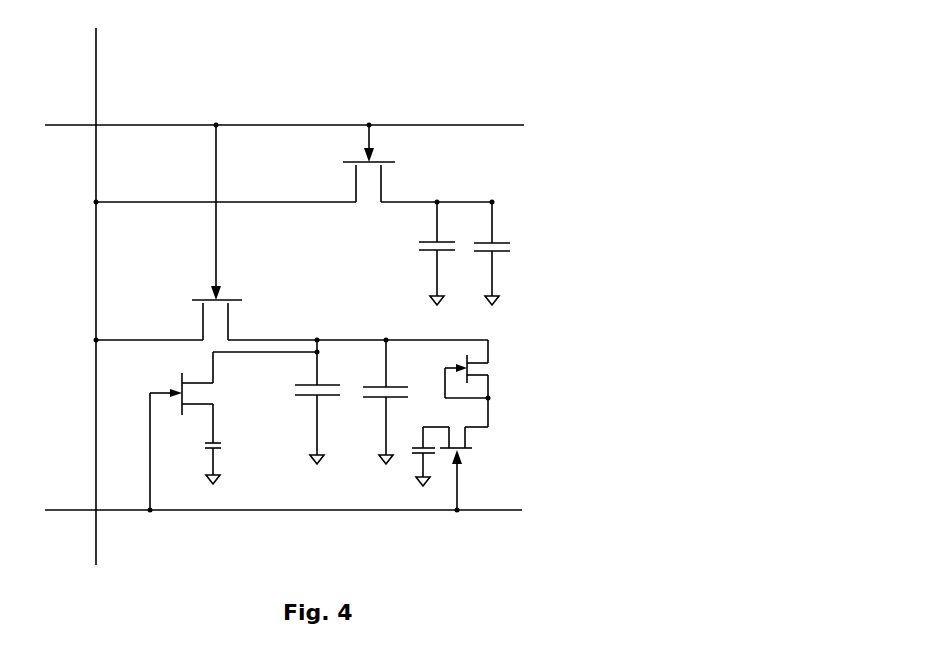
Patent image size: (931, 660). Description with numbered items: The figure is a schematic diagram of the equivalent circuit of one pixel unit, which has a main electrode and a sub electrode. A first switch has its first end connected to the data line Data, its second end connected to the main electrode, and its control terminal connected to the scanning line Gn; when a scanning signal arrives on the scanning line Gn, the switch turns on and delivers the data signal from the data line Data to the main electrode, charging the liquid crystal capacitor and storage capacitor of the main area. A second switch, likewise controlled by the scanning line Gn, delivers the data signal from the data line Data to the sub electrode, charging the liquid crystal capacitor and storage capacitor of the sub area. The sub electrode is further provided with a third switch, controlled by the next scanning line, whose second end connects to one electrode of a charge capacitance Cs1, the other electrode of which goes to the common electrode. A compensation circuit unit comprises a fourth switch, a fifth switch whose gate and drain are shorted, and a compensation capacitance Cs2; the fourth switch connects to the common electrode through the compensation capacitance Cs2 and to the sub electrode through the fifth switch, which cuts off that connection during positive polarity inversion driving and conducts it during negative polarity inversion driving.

The data line Data is at (127, 296).
The scanning line Gn is at (306, 125).
The charge capacitance Cs1 is at (229, 444).
The compensation capacitance Cs2 is at (413, 456).